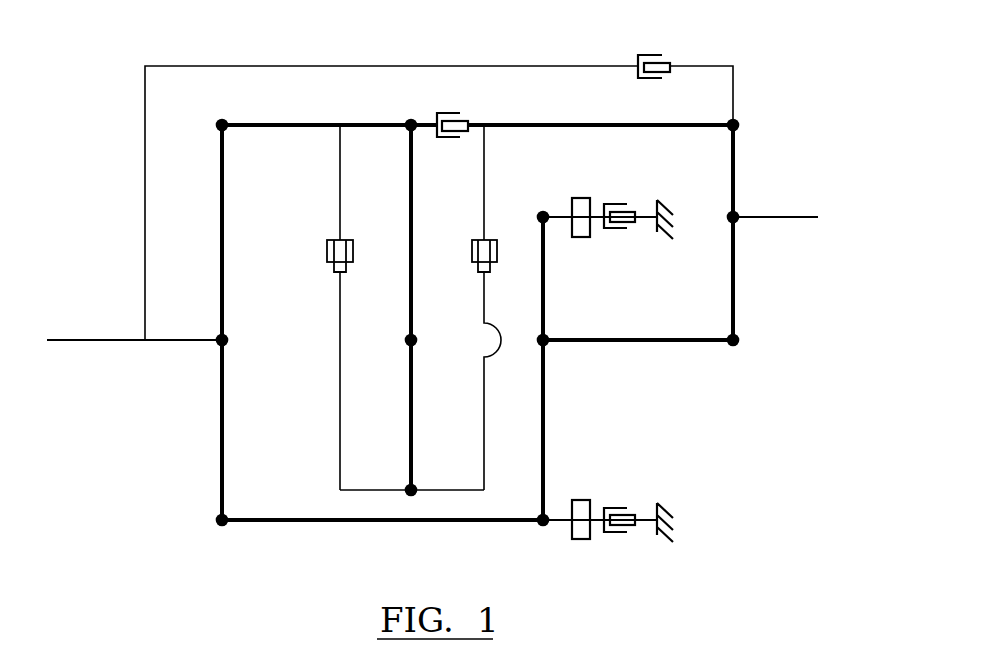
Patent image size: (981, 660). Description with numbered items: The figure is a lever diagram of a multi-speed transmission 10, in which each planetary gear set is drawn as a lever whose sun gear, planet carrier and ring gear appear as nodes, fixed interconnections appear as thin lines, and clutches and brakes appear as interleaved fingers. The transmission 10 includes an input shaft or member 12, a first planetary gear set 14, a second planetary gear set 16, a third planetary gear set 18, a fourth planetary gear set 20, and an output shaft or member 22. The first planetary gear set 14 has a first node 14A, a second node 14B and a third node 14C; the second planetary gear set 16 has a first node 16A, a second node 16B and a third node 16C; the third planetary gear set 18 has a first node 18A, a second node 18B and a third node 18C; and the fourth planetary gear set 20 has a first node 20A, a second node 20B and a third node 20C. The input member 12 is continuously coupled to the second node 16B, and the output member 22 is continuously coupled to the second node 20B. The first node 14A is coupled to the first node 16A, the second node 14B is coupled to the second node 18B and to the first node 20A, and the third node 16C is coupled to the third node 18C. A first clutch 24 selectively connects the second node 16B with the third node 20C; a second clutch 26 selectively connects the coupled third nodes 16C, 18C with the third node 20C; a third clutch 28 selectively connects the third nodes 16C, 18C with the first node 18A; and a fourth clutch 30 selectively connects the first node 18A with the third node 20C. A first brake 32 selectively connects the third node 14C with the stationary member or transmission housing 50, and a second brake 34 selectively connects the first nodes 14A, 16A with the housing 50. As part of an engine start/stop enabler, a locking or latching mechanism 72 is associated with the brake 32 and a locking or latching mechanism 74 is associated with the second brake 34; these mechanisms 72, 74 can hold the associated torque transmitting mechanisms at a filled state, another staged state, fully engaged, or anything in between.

The multi-speed transmission 10 is at (801, 25).
The input shaft or member 12 is at (132, 360).
The first planetary gear set 14 is at (511, 389).
The first node of the first planetary gear set 14A is at (587, 548).
The second node of the first planetary gear set 14B is at (635, 356).
The third node of the first planetary gear set 14C is at (579, 185).
The second planetary gear set 16 is at (189, 336).
The first node of the second planetary gear set 16A is at (369, 548).
The second node of the second planetary gear set 16B is at (181, 357).
The third node of the second planetary gear set 16C is at (297, 104).
The third planetary gear set 18 is at (374, 344).
The first node of the third planetary gear set 18A is at (412, 533).
The second node of the third planetary gear set 18B is at (386, 366).
The third node of the third planetary gear set 18C is at (373, 104).
The fourth planetary gear set 20 is at (765, 251).
The first node of the fourth planetary gear set 20A is at (725, 367).
The second node of the fourth planetary gear set 20B is at (708, 248).
The third node of the fourth planetary gear set 20C is at (772, 118).
The output shaft or member 22 is at (780, 232).
The first clutch 24 is at (439, 170).
The second clutch 26 is at (585, 107).
The third clutch 28 is at (300, 307).
The fourth clutch 30 is at (464, 307).
The first brake 32 is at (615, 188).
The second brake 34 is at (613, 491).
The stationary member or transmission housing 50 is at (674, 345).
The locking or latching mechanism 72 is at (589, 247).
The locking or latching mechanism 74 is at (587, 549).